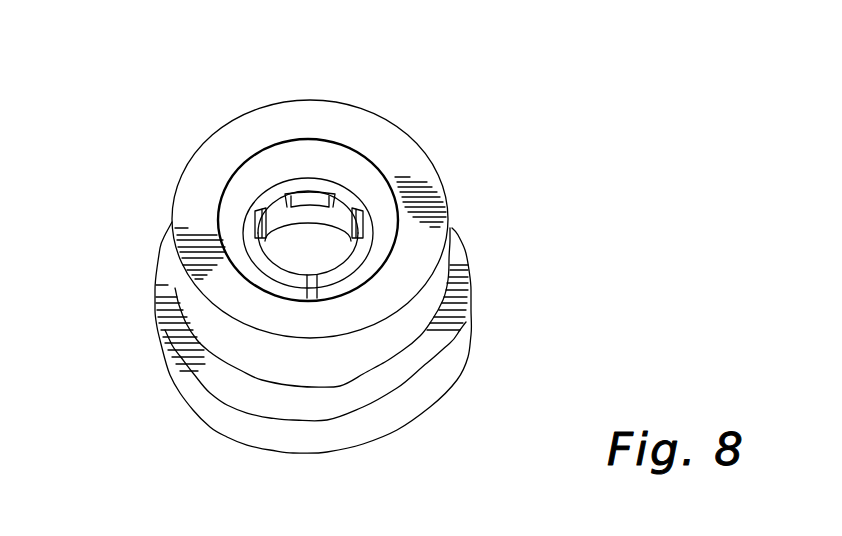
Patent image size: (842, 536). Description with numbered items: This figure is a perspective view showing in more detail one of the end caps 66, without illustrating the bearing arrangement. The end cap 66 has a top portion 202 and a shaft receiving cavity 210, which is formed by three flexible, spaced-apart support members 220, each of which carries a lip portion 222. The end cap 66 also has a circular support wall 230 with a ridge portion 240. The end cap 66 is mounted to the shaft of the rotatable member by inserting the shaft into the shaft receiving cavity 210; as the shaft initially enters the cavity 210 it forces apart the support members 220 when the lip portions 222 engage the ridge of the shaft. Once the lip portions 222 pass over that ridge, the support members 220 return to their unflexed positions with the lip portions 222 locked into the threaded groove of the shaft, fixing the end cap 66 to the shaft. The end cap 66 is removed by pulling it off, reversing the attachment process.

The end cap 66 is at (330, 100).
The top portion 202 is at (445, 368).
The shaft receiving cavity 210 is at (297, 233).
The support members 220 is at (314, 187).
The lip portion 222 is at (327, 252).
The circular support wall 230 is at (270, 360).
The ridge portion 240 is at (402, 163).